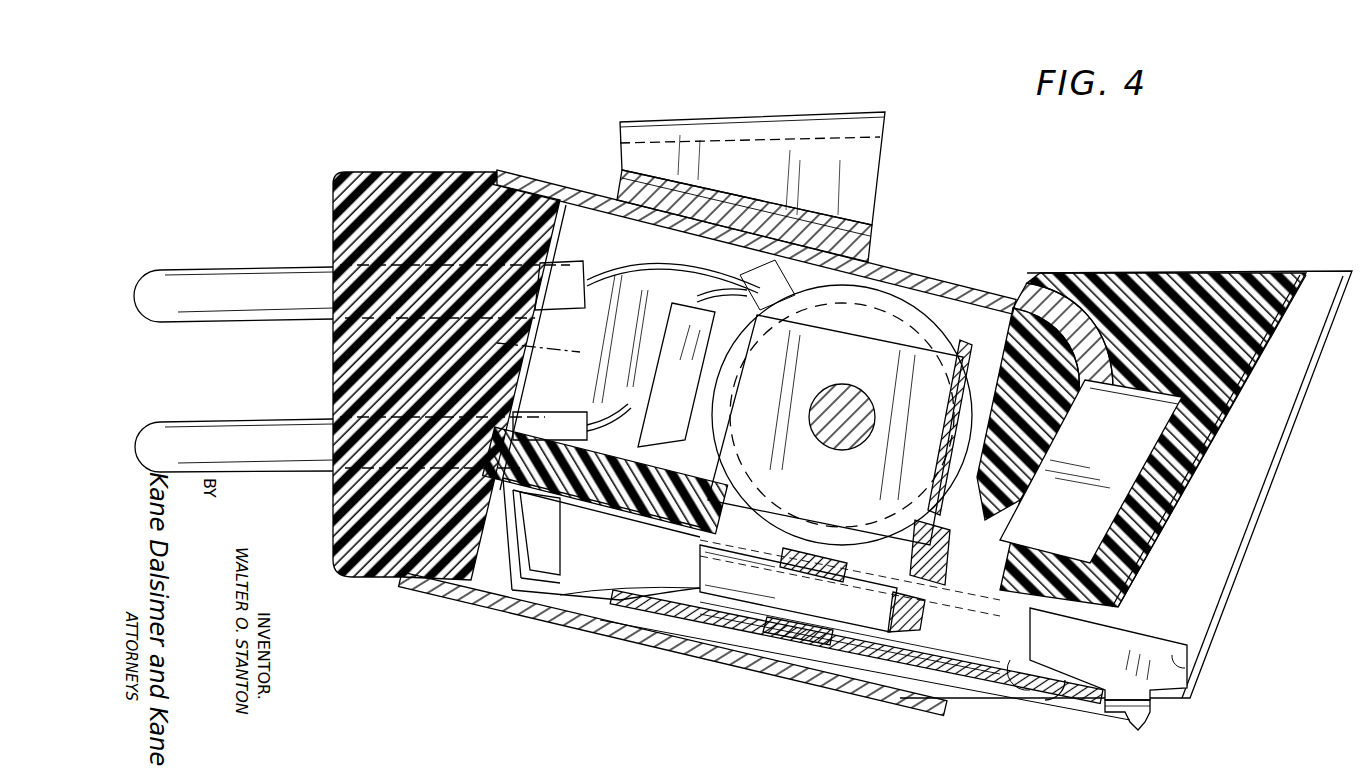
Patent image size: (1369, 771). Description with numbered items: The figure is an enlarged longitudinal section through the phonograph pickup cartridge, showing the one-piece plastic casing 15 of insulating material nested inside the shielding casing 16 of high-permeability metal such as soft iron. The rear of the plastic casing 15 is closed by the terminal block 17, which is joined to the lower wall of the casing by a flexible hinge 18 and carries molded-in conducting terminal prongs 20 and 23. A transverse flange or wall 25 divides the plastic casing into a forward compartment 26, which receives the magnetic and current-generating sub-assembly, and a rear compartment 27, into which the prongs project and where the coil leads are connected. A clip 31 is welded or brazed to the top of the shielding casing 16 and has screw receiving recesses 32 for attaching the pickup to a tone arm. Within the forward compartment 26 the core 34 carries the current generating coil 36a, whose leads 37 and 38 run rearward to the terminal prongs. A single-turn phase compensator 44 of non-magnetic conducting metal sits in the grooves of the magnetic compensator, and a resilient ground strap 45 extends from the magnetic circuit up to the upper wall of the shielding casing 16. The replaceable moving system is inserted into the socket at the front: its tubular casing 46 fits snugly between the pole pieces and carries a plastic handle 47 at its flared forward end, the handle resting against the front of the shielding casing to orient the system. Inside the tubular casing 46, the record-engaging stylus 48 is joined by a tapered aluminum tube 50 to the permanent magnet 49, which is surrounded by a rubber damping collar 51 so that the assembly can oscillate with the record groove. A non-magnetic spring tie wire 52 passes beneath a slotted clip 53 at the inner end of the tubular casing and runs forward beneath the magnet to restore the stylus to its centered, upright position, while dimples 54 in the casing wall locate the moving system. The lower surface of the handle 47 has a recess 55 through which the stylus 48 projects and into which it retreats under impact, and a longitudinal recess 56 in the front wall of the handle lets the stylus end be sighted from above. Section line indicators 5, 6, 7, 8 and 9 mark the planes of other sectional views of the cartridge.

The section line 5- 5 is at (893, 215).
The section line 6- 6 is at (775, 68).
The section line 7- 7 is at (214, 351).
The section line 8- 8 is at (385, 561).
The section line 9- 9 is at (358, 128).
The plastic casing 15 is at (1045, 300).
The shielding casing 16 is at (1023, 294).
The terminal block 17 is at (336, 205).
The flexible hinge 18 is at (452, 594).
The terminal prong 20 is at (303, 280).
The terminal prong 23 is at (288, 466).
The transverse flange or wall 25 is at (662, 430).
The forward section or compartment 26 is at (990, 310).
The rear section or compartment 27 is at (608, 280).
The clip 31 is at (868, 118).
The screw receiving recesses 32 is at (700, 110).
The core 34 is at (830, 445).
The current generating coil 36a is at (905, 360).
The coil lead 37 is at (645, 270).
The coil lead 38 is at (700, 296).
The phase compensator 44 is at (990, 538).
The ground strap 45 is at (965, 345).
The tubular casing 46 is at (618, 622).
The plastic handle 47 is at (1180, 274).
The stylus 48 is at (1150, 725).
The permanent magnet 49 is at (858, 640).
The tapered tube 50 is at (1045, 700).
The collar 51 is at (765, 655).
The tie wire 52 is at (660, 590).
The slotted clip 53 is at (535, 562).
The dimples 54 is at (830, 545).
The recess 55 is at (1196, 664).
The longitudinal recess 56 is at (1270, 440).